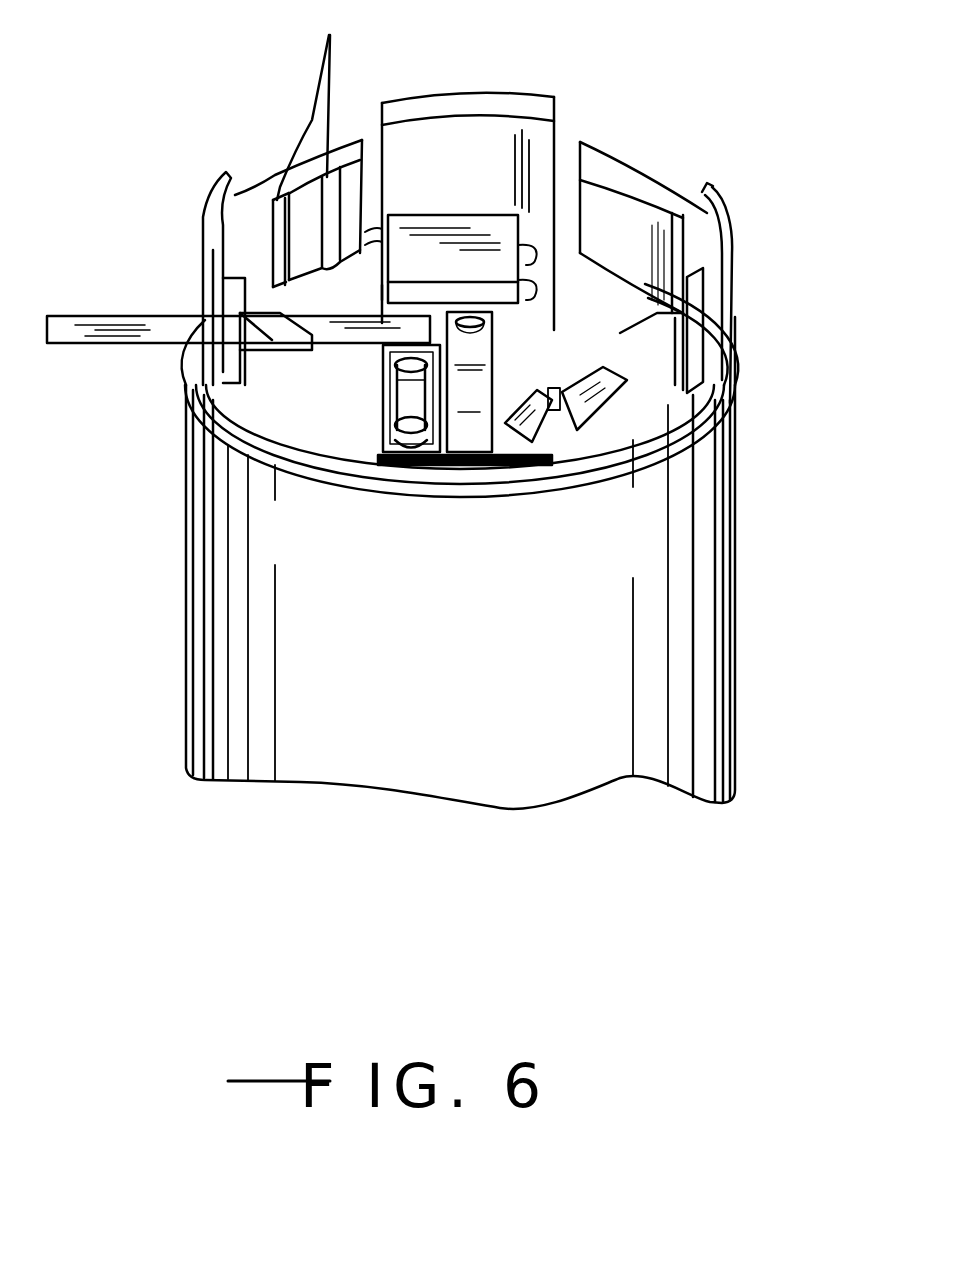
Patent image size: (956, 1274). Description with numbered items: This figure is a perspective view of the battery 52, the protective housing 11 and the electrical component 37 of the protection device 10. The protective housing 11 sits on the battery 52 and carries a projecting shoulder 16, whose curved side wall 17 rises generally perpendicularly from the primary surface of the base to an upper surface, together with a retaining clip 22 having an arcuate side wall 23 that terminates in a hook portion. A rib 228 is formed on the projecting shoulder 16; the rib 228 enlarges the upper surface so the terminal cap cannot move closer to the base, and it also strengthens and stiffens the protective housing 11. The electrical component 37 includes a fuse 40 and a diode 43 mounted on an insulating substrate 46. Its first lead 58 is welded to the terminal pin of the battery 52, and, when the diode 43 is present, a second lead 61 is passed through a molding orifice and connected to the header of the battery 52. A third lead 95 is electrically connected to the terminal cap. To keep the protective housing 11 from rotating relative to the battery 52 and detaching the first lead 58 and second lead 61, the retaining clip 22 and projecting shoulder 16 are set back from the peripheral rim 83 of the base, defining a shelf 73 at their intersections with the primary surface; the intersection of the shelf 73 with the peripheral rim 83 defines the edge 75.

The protection device 10 is at (165, 437).
The protective housing 11 is at (740, 220).
The projecting shoulder 16 is at (258, 160).
The curved side wall 17 is at (368, 165).
The retaining clip 22 is at (470, 188).
The arcuate side wall 23 is at (508, 142).
The electrical component 37 is at (365, 412).
The fuse 40 is at (400, 388).
The diode 43 is at (445, 291).
The insulating substrate 46 is at (382, 293).
The battery 52 is at (456, 638).
The first lead 58 is at (477, 398).
The second lead 61 is at (558, 392).
The shelf 73 is at (737, 340).
The edge 75 is at (653, 290).
The peripheral rim 83 is at (549, 484).
The third lead 95 is at (140, 347).
The rib 228 is at (323, 100).